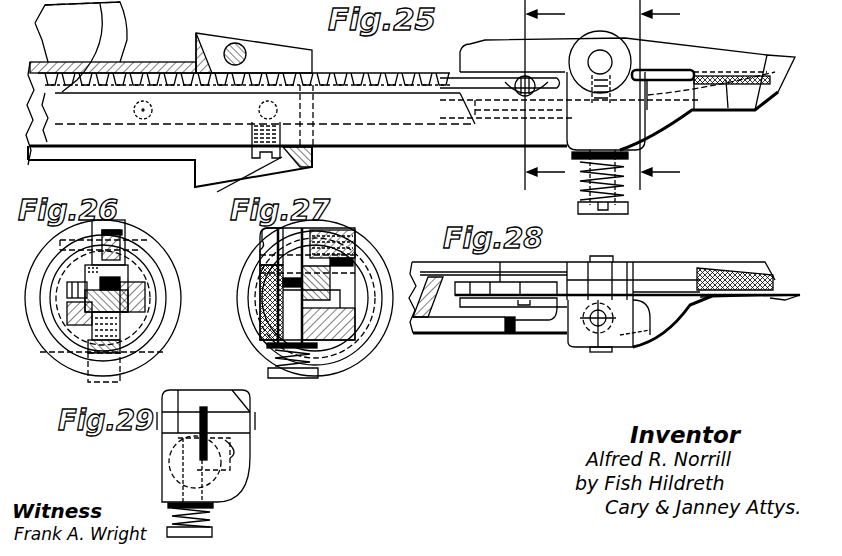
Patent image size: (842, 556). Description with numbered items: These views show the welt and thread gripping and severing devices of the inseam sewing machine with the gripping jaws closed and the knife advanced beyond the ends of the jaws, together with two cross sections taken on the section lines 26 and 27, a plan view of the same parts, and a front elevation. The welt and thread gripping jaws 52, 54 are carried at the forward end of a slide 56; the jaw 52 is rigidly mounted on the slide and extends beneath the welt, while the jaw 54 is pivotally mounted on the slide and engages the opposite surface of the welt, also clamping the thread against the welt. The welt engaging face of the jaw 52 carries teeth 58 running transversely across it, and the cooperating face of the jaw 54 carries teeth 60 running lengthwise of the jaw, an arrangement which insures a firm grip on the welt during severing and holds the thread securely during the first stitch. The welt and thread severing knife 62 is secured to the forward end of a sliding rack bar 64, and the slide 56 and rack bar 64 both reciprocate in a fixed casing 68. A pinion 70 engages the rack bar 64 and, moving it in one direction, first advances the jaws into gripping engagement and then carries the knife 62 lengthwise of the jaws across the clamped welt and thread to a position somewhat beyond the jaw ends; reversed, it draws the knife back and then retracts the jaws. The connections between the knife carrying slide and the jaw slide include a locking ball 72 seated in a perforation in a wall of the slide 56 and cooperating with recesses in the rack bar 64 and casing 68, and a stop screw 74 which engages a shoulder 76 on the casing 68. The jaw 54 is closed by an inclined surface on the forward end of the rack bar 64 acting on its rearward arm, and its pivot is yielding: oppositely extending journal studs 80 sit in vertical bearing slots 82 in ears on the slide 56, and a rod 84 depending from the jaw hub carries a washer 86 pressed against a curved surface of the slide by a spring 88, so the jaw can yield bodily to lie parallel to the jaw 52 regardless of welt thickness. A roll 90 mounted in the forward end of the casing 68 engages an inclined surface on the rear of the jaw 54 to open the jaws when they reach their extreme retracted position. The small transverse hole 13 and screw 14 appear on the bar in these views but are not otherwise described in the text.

In FIG. 25, the transverse hole 13 is at (140, 118).
In FIG. 25, the screw 14 is at (252, 158).
In FIG. 25, the section line 26— 26 is at (537, 102).
In FIG. 25, the section line 27— 27 is at (660, 102).
In FIG. 25, the welt and thread gripping jaw 52 is at (705, 112).
In FIG. 28, the welt and thread gripping jaw 52 is at (680, 312).
In FIG. 29, the welt and thread gripping jaw 52 is at (223, 440).
In FIG. 25, the welt and thread gripping jaw 54 is at (722, 60).
In FIG. 26, the welt and thread gripping jaw 54 is at (118, 230).
In FIG. 27, the welt and thread gripping jaw 54 is at (340, 235).
In FIG. 28, the welt and thread gripping jaw 54 is at (670, 270).
In FIG. 29, the welt and thread gripping jaw 54 is at (215, 412).
In FIG. 25, the slide 56 is at (400, 143).
In FIG. 26, the slide 56 is at (160, 300).
In FIG. 27, the slide 56 is at (350, 345).
In FIG. 28, the slide 56 is at (486, 338).
In FIG. 25, the teeth 58 is at (730, 100).
In FIG. 25, the teeth 60 is at (745, 70).
In FIG. 28, the teeth 60 is at (735, 275).
In FIG. 25, the welt and thread severing knife 62 is at (778, 85).
In FIG. 26, the welt and thread severing knife 62 is at (100, 295).
In FIG. 27, the welt and thread severing knife 62 is at (290, 278).
In FIG. 28, the welt and thread severing knife 62 is at (790, 300).
In FIG. 25, the sliding rack bar 64 is at (122, 70).
In FIG. 26, the sliding rack bar 64 is at (128, 304).
In FIG. 28, the sliding rack bar 64 is at (420, 275).
In FIG. 25, the fixed casing 68 is at (160, 58).
In FIG. 26, the fixed casing 68 is at (145, 272).
In FIG. 27, the fixed casing 68 is at (244, 320).
In FIG. 25, the pinion 70 is at (122, 16).
In FIG. 26, the locking ball 72 is at (140, 290).
In FIG. 27, the locking ball 72 is at (365, 325).
In FIG. 25, the screw 74 is at (226, 26).
In FIG. 26, the screw 74 is at (138, 335).
In FIG. 25, the shoulder 76 is at (262, 30).
In FIG. 25, the journal studs 80 is at (594, 48).
In FIG. 28, the journal studs 80 is at (605, 256).
In FIG. 25, the vertical bearing slots 82 is at (606, 48).
In FIG. 25, the rod 84 is at (580, 183).
In FIG. 27, the rod 84 is at (270, 348).
In FIG. 28, the rod 84 is at (568, 340).
In FIG. 29, the rod 84 is at (183, 476).
In FIG. 25, the washer 86 is at (628, 155).
In FIG. 27, the washer 86 is at (325, 355).
In FIG. 28, the washer 86 is at (650, 330).
In FIG. 29, the washer 86 is at (168, 505).
In FIG. 25, the spring 88 is at (632, 162).
In FIG. 27, the spring 88 is at (300, 380).
In FIG. 28, the spring 88 is at (625, 350).
In FIG. 29, the spring 88 is at (212, 525).
In FIG. 25, the roll 90 is at (243, 46).
In FIG. 26, the roll 90 is at (120, 245).
In FIG. 27, the roll 90 is at (352, 248).